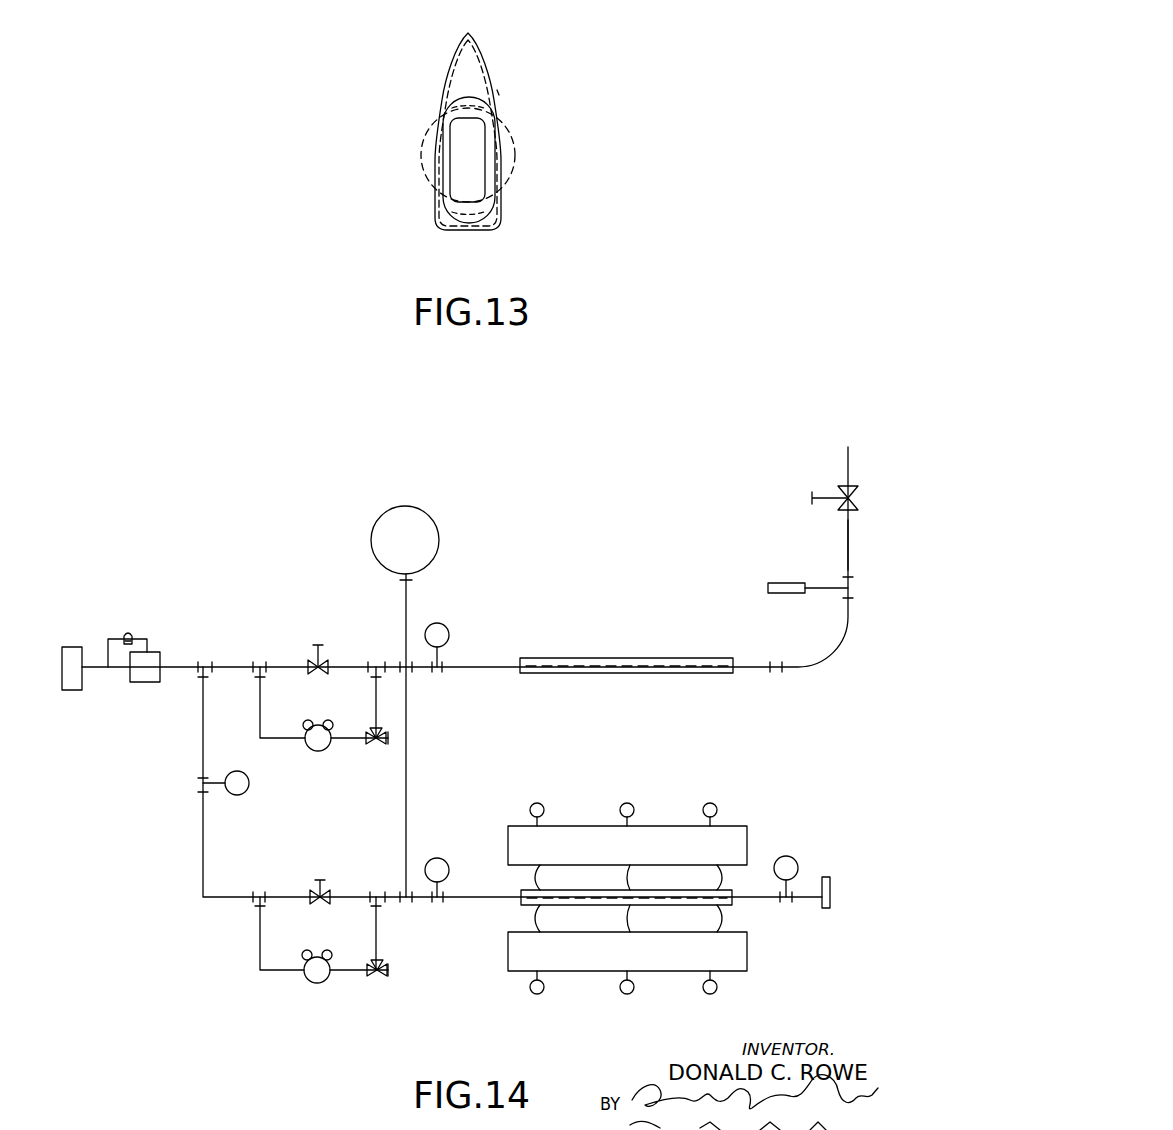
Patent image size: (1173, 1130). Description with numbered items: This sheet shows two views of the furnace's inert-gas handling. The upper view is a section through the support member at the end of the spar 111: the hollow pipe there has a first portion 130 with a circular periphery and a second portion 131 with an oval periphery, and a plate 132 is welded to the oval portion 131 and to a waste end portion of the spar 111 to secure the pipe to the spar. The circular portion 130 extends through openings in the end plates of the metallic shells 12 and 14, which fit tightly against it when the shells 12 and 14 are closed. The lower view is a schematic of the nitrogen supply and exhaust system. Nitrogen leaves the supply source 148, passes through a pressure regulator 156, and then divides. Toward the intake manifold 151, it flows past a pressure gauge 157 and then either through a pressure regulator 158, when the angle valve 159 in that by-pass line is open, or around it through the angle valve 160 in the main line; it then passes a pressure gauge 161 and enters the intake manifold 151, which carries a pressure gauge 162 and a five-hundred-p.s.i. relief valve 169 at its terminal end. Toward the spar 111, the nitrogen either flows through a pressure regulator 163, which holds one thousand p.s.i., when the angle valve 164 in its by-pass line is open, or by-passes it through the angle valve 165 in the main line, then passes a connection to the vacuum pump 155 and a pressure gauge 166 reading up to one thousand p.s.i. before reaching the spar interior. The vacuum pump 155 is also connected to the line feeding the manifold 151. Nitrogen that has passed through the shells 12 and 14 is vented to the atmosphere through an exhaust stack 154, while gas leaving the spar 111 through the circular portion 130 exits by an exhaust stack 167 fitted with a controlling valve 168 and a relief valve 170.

In FIG. 14, the metallic shell 12 is at (637, 963).
In FIG. 14, the metallic shell 14 is at (638, 858).
In FIG. 13, the spar 111 is at (498, 84).
In FIG. 14, the spar 111 is at (547, 658).
In FIG. 13, the first portion 130 is at (516, 157).
In FIG. 13, the second portion 131 is at (448, 168).
In FIG. 13, the plate 132 is at (468, 68).
In FIG. 14, the nitrogen supply source 148 is at (72, 648).
In FIG. 14, the intake manifold 151 is at (522, 900).
In FIG. 14, the exhaust stack 154 is at (540, 803).
In FIG. 14, the vacuum pump 155 is at (432, 557).
In FIG. 14, the pressure regulator 156 is at (135, 642).
In FIG. 14, the pressure gauge 157 is at (237, 795).
In FIG. 14, the pressure regulator 158 is at (312, 983).
In FIG. 14, the angle valve 159 is at (378, 978).
In FIG. 14, the angle valve 160 is at (324, 892).
In FIG. 14, the pressure gauge 161 is at (452, 827).
In FIG. 14, the pressure gauge 162 is at (794, 860).
In FIG. 14, the pressure regulator 163 is at (317, 751).
In FIG. 14, the angle valve 164 is at (374, 747).
In FIG. 14, the angle valve 165 is at (323, 661).
In FIG. 14, the pressure gauge 166 is at (449, 630).
In FIG. 14, the exhaust stack 167 is at (847, 550).
In FIG. 14, the valve 168 is at (843, 502).
In FIG. 14, the relief valve 169 is at (820, 908).
In FIG. 14, the relief valve 170 is at (782, 593).